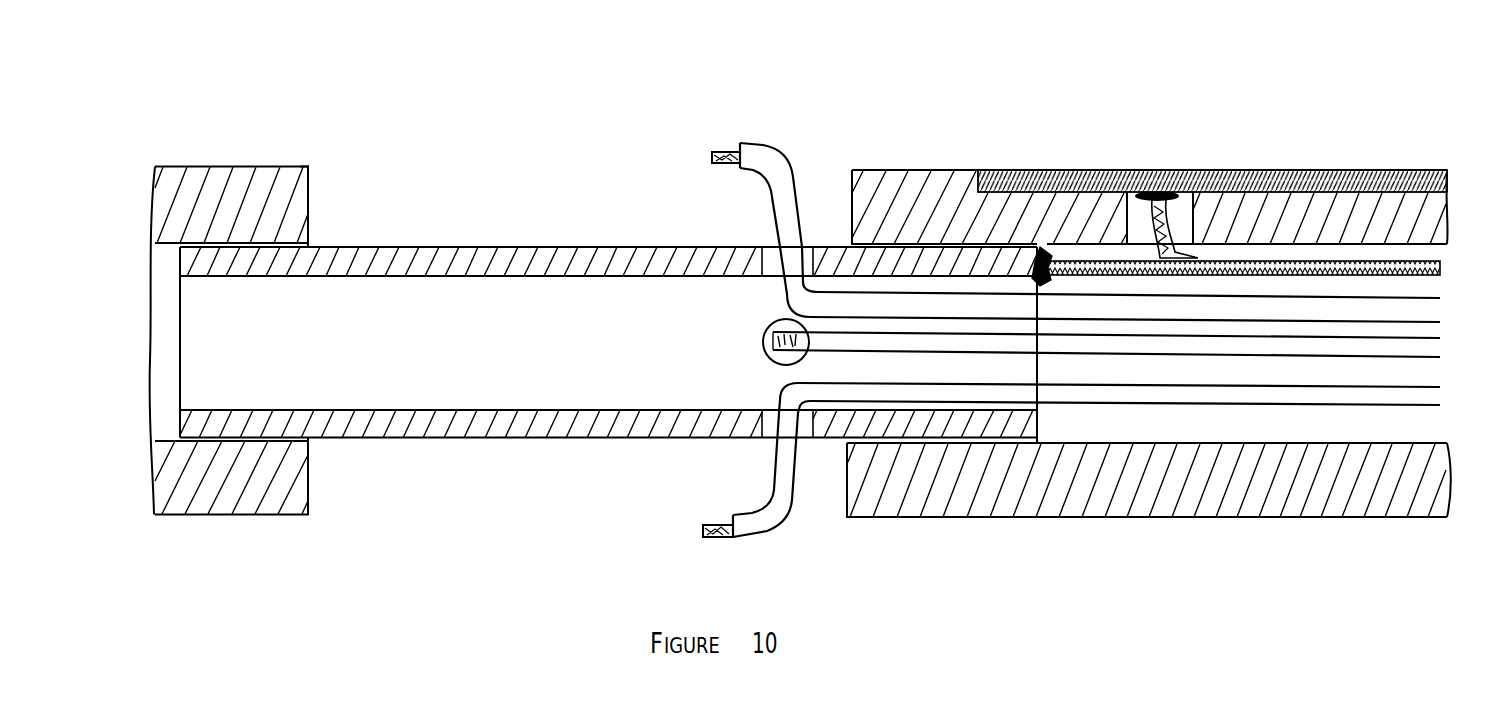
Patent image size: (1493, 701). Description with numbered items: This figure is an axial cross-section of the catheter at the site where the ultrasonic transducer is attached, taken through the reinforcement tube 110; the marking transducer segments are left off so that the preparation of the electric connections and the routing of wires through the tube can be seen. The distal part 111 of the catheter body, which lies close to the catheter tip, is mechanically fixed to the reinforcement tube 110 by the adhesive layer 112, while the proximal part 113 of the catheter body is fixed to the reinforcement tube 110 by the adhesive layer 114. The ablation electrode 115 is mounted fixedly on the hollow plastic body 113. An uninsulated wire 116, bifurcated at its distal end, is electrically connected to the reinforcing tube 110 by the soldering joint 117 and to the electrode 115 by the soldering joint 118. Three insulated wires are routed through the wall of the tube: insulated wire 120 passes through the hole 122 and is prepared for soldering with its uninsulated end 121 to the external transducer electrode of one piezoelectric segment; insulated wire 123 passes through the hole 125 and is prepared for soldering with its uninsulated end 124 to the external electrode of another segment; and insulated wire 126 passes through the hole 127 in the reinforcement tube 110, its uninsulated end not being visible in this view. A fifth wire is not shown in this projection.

The reinforcement tube 110 is at (410, 255).
The distal part of the catheter body 111 is at (227, 200).
The adhesive layer 112 is at (313, 247).
The proximal part of the catheter body 113 is at (1090, 487).
The adhesive layer 114 is at (875, 247).
The ablation electrode 115 is at (1280, 173).
The uninsulated wire 116 is at (1362, 268).
The soldering joint 117 is at (1043, 262).
The soldering joint 118 is at (1207, 173).
The insulated wire 120 is at (753, 142).
The uninsulated end 121 is at (720, 155).
The hole 122 is at (807, 247).
The insulated wire 123 is at (770, 530).
The uninsulated end 124 is at (707, 530).
The hole 125 is at (752, 438).
The insulated wire 126 is at (1263, 345).
The hole 127 is at (780, 328).